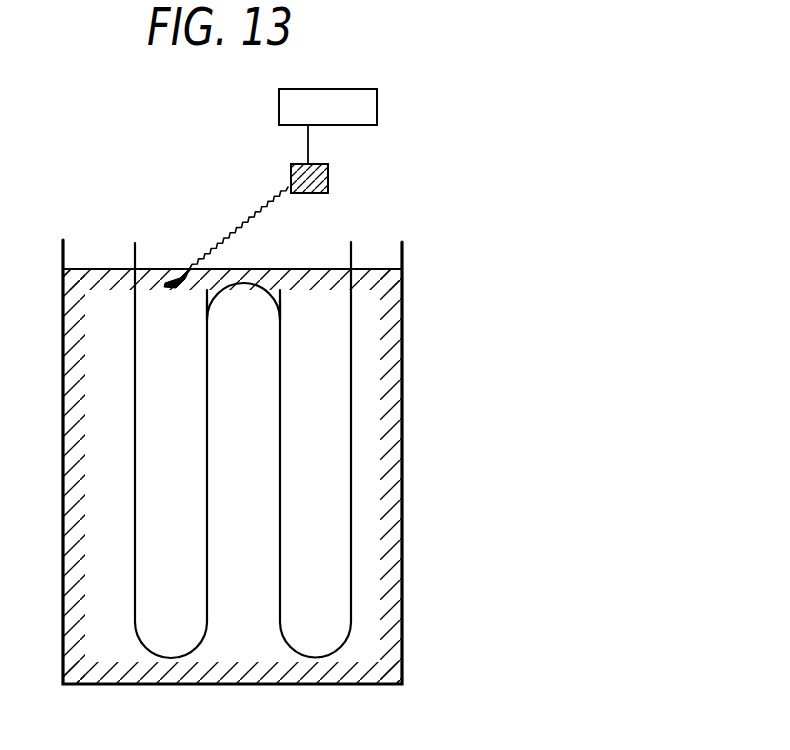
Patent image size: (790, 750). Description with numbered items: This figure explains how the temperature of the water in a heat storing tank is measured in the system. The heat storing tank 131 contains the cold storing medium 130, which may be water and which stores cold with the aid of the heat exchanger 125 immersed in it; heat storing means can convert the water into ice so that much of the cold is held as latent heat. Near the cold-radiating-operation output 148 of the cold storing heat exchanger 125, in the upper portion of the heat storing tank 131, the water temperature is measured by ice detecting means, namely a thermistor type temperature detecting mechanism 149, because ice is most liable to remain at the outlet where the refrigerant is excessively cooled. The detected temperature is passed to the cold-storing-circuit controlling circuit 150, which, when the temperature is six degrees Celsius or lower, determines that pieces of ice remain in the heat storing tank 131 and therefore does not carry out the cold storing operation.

The heat exchanger 125 is at (351, 575).
The cold storing medium 130 is at (375, 612).
The heat storing tank 131 is at (402, 441).
The cold-radiating-operation output 148 is at (135, 257).
The thermistor type temperature detecting mechanism 149 is at (258, 215).
The cold-storing-circuit controlling circuit 150 is at (377, 107).